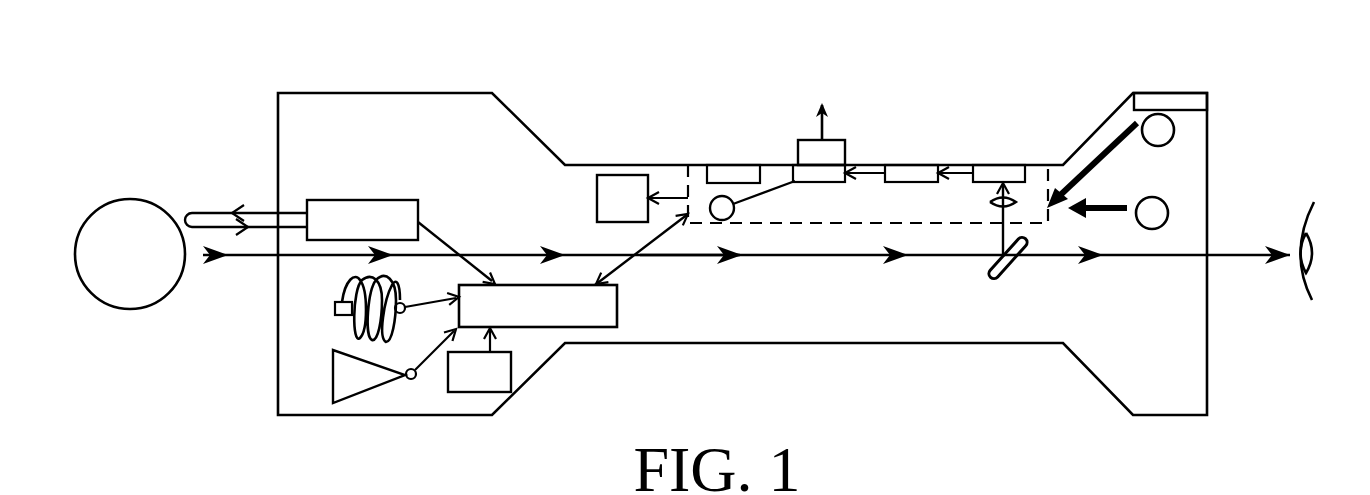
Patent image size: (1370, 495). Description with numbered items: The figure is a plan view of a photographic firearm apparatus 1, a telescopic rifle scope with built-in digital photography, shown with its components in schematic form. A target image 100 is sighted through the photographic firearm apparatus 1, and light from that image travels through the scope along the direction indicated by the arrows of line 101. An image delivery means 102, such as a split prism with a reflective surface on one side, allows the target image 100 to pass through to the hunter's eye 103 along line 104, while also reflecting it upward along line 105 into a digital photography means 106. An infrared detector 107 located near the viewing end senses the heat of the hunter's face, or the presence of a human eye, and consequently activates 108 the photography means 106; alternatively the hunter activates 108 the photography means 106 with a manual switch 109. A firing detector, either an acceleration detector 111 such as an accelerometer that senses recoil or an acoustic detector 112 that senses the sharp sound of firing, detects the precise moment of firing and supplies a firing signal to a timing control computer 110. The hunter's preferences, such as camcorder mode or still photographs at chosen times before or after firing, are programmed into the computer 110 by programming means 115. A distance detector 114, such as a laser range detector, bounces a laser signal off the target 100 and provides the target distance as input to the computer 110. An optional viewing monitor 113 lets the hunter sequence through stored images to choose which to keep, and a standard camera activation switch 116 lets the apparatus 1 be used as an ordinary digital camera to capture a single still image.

The photographic firearm apparatus 1 is at (686, 138).
The target image 100 is at (108, 272).
The line of light travel 101 is at (688, 256).
The image delivery means 102 is at (1012, 264).
The hunter's eye 103 is at (1321, 266).
The line to hunter's eye 104 is at (1243, 258).
The line of reflection 105 is at (1008, 234).
The digital photography means 106 is at (846, 214).
The infrared detector 107 is at (1165, 100).
The activation 108 is at (1103, 152).
The manual switch 109 is at (1158, 130).
The timing control computer 110 is at (513, 322).
The acceleration detector 111 is at (355, 322).
The acoustic detector 112 is at (358, 375).
The viewing monitor 113 is at (600, 209).
The distance detector 114 is at (380, 234).
The programming means 115 is at (456, 387).
The camera activation switch 116 is at (1150, 212).